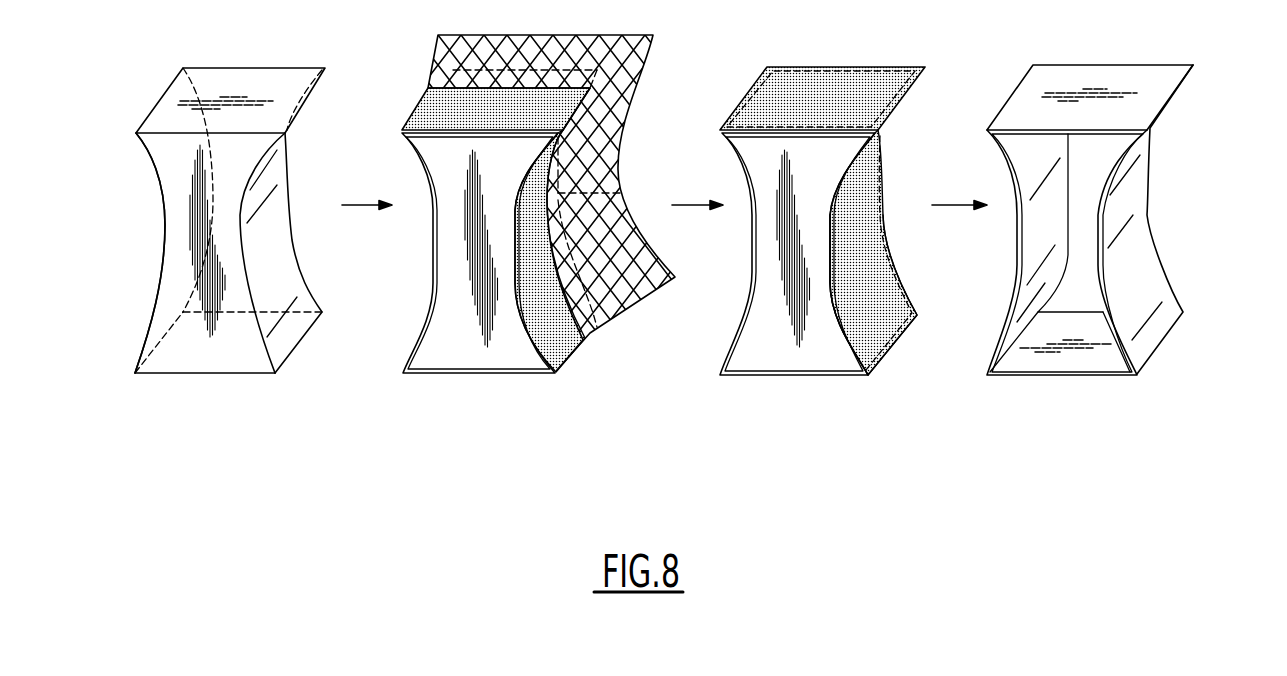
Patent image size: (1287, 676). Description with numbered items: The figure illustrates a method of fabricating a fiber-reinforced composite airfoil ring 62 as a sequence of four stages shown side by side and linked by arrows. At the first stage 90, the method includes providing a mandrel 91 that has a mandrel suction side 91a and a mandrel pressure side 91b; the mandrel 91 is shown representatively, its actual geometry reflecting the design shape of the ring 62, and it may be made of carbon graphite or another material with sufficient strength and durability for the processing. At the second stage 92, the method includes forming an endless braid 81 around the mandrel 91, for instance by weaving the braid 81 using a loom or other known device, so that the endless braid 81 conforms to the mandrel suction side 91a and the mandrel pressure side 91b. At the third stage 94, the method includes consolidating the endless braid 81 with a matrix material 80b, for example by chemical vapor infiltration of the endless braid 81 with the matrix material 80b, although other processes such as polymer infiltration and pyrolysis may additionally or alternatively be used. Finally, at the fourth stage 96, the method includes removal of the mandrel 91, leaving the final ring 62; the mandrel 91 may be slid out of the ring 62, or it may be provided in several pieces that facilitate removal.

The mandrel providing step 90 is at (215, 392).
The mandrel 91 is at (289, 60).
The mandrel suction side 91a is at (265, 252).
The mandrel pressure side 91b is at (166, 221).
The endless braid 81 is at (430, 112).
The braid forming step 92 is at (470, 392).
The consolidating step 94 is at (800, 392).
The matrix material 80b is at (857, 255).
The mandrel removal step 96 is at (1068, 392).
The fiber-reinforced airfoil ring 62 is at (1142, 350).